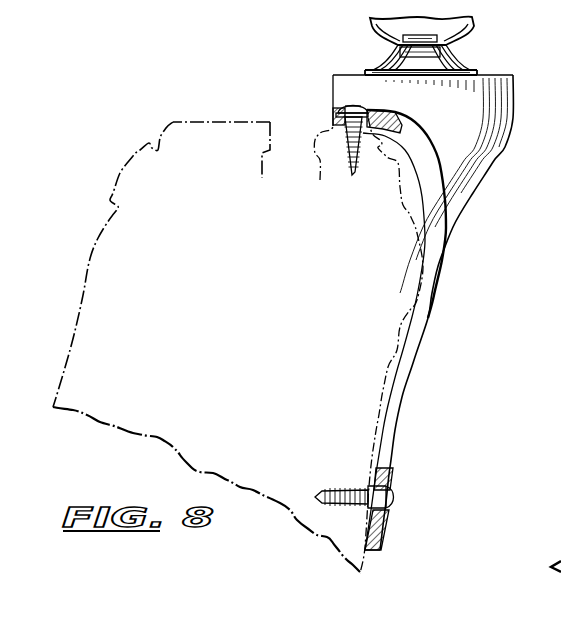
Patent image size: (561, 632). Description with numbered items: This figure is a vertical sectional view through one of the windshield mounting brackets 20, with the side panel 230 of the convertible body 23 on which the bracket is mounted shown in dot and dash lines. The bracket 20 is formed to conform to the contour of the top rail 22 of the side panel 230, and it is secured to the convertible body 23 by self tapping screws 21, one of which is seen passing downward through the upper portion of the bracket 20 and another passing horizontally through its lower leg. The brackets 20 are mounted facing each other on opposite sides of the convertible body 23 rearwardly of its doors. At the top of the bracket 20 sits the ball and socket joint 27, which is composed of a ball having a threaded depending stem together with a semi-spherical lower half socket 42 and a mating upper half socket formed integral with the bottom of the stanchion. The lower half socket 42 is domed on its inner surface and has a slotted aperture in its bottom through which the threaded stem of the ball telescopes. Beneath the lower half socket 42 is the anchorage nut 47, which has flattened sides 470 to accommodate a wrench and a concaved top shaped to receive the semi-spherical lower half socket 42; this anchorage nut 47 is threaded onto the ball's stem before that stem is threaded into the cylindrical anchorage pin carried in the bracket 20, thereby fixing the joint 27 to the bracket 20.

The bracket 20 is at (498, 118).
The self tapping screw 21 is at (345, 105).
The top rail 22 is at (403, 201).
The convertible body 23 is at (110, 226).
The ball and socket joint 27 is at (475, 27).
The lower half socket 42 is at (393, 25).
The anchorage nut 47 is at (400, 53).
The flattened sides 470 is at (440, 46).
The side panel 230 is at (163, 440).